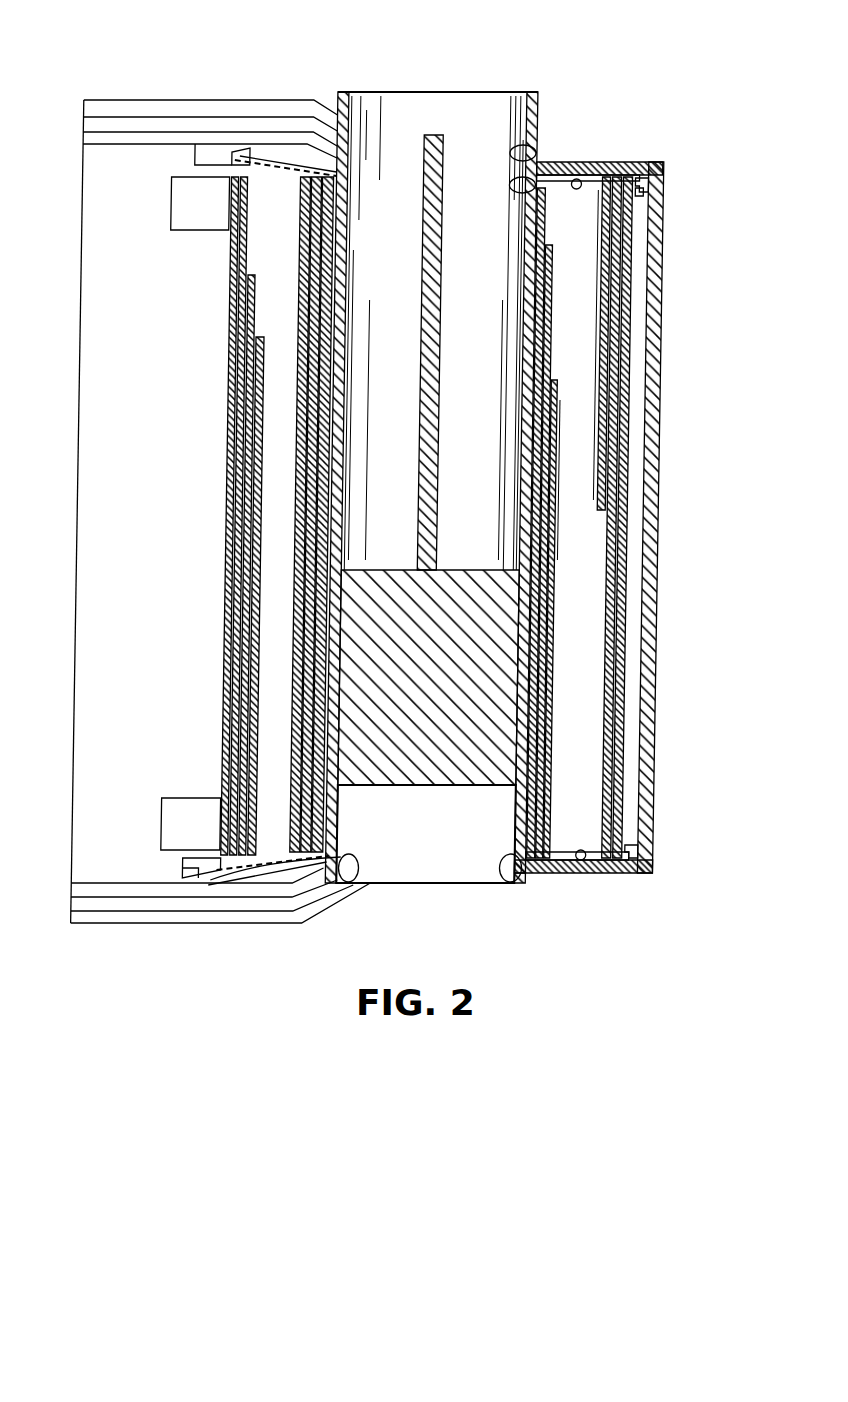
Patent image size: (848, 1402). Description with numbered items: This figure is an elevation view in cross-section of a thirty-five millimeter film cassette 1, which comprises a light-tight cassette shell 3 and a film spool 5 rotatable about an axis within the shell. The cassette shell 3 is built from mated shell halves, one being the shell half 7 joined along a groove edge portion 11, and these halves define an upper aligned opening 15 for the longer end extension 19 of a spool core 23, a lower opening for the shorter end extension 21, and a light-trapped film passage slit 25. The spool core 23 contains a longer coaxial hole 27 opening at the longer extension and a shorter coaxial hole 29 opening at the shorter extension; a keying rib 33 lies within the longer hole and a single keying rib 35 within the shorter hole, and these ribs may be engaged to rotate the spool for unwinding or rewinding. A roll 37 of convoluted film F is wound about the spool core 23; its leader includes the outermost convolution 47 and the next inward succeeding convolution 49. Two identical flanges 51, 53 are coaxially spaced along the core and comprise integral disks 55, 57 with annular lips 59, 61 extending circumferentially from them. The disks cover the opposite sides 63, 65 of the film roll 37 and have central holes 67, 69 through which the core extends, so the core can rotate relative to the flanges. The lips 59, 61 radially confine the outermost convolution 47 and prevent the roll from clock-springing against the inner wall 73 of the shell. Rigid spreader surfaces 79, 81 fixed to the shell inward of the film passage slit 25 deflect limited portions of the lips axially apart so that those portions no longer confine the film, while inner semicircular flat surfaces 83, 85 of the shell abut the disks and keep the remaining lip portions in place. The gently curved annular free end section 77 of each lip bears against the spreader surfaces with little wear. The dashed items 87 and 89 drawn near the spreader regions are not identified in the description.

The film cassette 1 is at (154, 80).
The cassette shell 3 is at (680, 800).
The film spool 5 is at (222, 500).
The shell half 7 is at (217, 100).
The groove edge portion 11 is at (93, 122).
The upper aligned opening 15 is at (537, 141).
The longer end extension 19 is at (537, 100).
The shorter end extension 21 is at (537, 880).
The spool core 23 is at (475, 575).
The film passage slit 25 is at (108, 296).
The longer coaxial hole 27 is at (405, 106).
The shorter coaxial hole 29 is at (409, 853).
The keying rib 33 is at (443, 160).
The keying rib 35 is at (474, 787).
The film roll 37 is at (232, 340).
The outermost convolution 47 is at (232, 387).
The next inward succeeding convolution 49 is at (232, 433).
The flange 51 is at (240, 158).
The flange 53 is at (223, 880).
The disk 55 is at (283, 173).
The disk 57 is at (289, 858).
The annular lip 59 is at (232, 165).
The annular lip 61 is at (194, 873).
The side of film roll 63 is at (258, 212).
The side of film roll 65 is at (249, 855).
The central hole 67 is at (337, 170).
The central hole 69 is at (369, 885).
The inner wall 73 is at (650, 492).
The annular free end section 77 is at (228, 172).
The spreader surface 79 is at (172, 185).
The spreader surface 81 is at (178, 855).
The inner semicircular flat surface 83 is at (578, 180).
The inner semicircular flat surface 85 is at (592, 860).
The hidden connector 87 is at (200, 232).
The hidden connector 89 is at (203, 798).
The film F is at (288, 573).